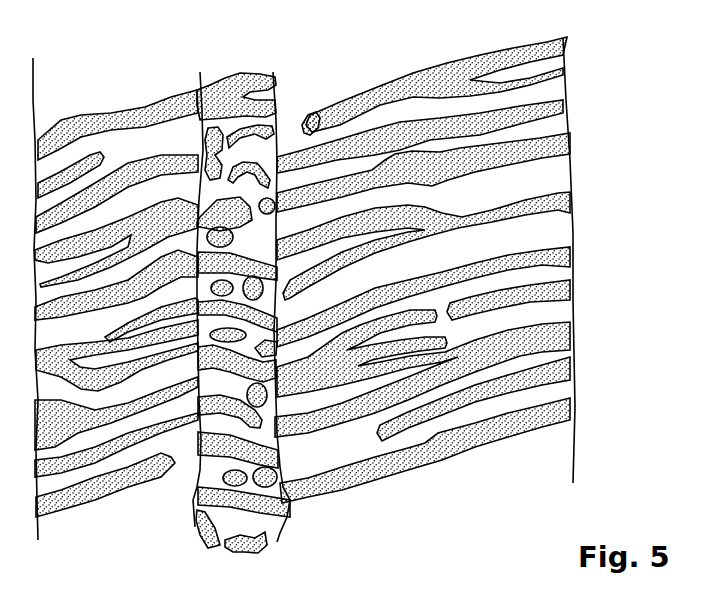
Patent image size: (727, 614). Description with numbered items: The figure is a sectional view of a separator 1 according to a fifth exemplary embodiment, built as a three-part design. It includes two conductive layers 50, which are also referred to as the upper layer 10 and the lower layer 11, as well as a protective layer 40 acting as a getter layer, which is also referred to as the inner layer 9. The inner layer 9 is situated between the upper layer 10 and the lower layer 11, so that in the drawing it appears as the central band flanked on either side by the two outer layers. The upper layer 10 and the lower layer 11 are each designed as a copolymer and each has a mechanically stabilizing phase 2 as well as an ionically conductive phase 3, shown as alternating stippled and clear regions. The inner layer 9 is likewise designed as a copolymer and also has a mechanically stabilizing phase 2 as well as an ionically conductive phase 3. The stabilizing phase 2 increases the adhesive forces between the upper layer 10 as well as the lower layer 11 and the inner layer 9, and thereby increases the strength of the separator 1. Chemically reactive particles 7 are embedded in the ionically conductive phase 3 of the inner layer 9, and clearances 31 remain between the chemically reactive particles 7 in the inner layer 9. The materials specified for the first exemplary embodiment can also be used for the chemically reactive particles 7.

The separator 1 is at (101, 71).
The mechanically stabilizing phase 2 is at (275, 122).
The ionically conductive phase 3 is at (553, 137).
The chemically reactive particles 7 is at (233, 550).
The inner layer 9 is at (273, 72).
The upper layer 10 is at (570, 432).
The lower layer 11 is at (188, 489).
The clearances 31 is at (277, 157).
The protective layer 40 is at (241, 310).
The conductive layers 50 is at (302, 358).